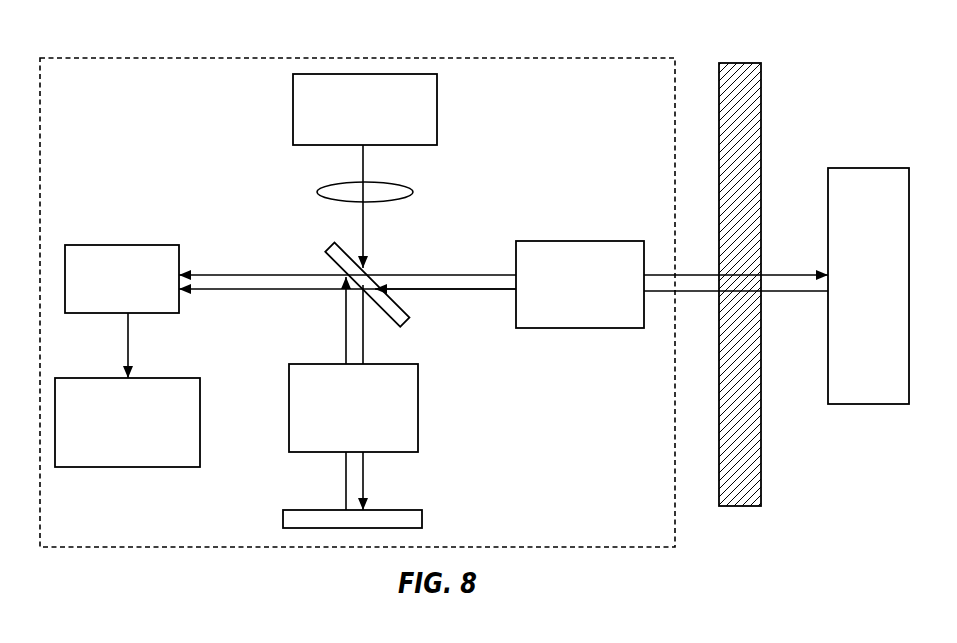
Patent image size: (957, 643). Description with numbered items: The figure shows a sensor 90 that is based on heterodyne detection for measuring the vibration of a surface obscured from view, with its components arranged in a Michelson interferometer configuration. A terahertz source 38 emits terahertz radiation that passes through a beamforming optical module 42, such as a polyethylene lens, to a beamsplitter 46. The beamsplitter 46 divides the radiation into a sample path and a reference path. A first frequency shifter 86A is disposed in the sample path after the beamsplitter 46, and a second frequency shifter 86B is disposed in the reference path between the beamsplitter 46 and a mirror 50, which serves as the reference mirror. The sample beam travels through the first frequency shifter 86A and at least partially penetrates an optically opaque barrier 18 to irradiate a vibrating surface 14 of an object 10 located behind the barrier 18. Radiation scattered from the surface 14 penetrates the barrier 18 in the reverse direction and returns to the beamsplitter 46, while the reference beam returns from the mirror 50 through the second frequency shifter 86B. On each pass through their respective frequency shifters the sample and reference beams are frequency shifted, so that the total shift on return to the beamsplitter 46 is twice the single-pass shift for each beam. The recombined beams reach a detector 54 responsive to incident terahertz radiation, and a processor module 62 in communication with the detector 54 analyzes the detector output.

The sensor 90 is at (208, 58).
The terahertz source 38 is at (377, 131).
The beamforming optical module 42 is at (405, 197).
The beamsplitter 46 is at (404, 325).
The detector 54 is at (132, 301).
The processor module 62 is at (138, 460).
The first frequency shifter 86A is at (598, 320).
The second frequency shifter 86B is at (372, 443).
The mirror 50 is at (422, 518).
The barrier 18 is at (761, 87).
The vibrating surface 14 is at (857, 269).
The object 10 is at (879, 305).